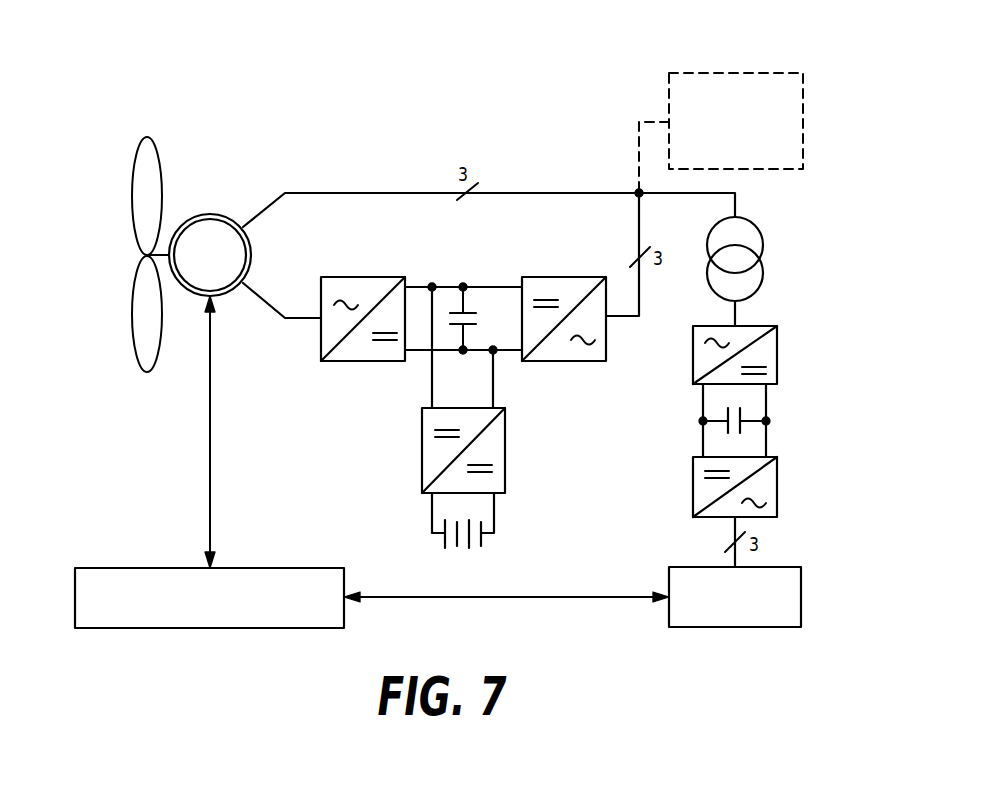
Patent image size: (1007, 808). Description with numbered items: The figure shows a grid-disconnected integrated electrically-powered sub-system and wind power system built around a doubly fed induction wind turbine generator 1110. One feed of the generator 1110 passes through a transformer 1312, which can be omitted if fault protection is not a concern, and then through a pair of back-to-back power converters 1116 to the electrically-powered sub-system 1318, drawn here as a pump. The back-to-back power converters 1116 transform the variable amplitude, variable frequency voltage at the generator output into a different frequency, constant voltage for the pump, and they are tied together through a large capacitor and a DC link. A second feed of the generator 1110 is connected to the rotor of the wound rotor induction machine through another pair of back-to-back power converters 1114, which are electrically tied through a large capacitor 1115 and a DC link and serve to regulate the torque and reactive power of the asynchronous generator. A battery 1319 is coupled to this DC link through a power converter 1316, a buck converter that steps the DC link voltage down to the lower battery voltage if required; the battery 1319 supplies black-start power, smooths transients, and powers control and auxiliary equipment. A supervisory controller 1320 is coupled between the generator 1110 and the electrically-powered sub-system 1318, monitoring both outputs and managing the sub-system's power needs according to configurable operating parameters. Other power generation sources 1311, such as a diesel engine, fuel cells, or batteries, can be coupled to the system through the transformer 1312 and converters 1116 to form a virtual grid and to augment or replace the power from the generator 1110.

The DFIG wind turbine generator 1110 is at (210, 214).
The back-to-back power converters 1114 is at (364, 277).
The capacitor 1115 is at (472, 308).
The back-to-back power converters 1116 is at (778, 356).
The other power generation sources 1311 is at (743, 72).
The transformer 1312 is at (764, 245).
The power converter (buck converter) 1316 is at (506, 450).
The electrically-powered sub-system 1318 is at (802, 597).
The battery 1319 is at (482, 540).
The supervisory controller 1320 is at (267, 568).